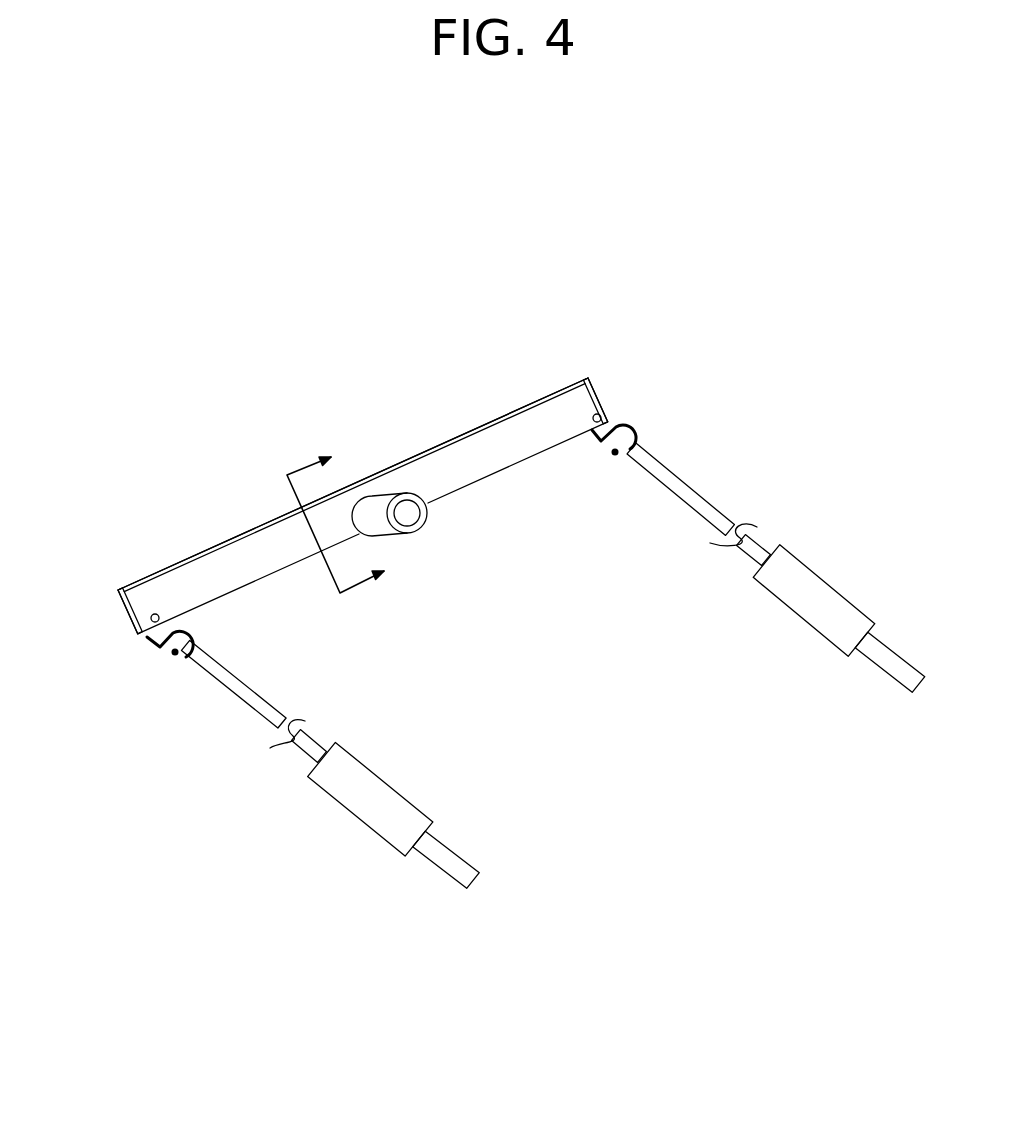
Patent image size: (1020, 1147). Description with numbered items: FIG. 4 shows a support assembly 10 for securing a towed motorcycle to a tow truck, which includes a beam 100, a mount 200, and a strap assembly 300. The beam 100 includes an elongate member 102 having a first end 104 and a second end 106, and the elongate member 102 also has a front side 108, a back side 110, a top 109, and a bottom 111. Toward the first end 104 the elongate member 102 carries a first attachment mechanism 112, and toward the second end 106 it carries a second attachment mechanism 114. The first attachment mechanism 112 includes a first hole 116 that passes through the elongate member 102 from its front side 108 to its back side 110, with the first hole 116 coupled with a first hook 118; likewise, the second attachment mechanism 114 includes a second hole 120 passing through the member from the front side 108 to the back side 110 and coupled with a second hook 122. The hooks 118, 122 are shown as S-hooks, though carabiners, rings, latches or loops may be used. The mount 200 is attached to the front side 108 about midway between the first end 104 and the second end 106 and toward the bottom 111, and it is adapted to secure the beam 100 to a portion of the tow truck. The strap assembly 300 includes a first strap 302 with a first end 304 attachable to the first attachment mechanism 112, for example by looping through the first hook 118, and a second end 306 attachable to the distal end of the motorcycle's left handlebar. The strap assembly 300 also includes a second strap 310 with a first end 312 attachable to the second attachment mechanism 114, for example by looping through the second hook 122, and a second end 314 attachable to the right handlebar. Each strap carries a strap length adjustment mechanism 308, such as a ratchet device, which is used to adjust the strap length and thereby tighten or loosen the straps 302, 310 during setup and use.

The support assembly 10 is at (230, 277).
The beam 100 is at (340, 344).
The elongate member 102 is at (422, 381).
The first end 104 is at (130, 610).
The second end 106 is at (600, 391).
The front side 108 is at (445, 470).
The top 109 is at (240, 534).
The back side 110 is at (477, 417).
The bottom 111 is at (475, 490).
The first attachment mechanism 112 is at (152, 660).
The second attachment mechanism 114 is at (637, 418).
The first hole 116 is at (155, 614).
The first hook 118 is at (188, 638).
The second hole 120 is at (593, 417).
The second hook 122 is at (605, 441).
The mount 200 is at (412, 540).
The strap assembly 300 is at (212, 765).
The first strap 302 is at (243, 708).
The first end 304 is at (183, 663).
The second end 306 is at (475, 885).
The strap length adjustment mechanism 308 is at (353, 810).
The second strap 310 is at (695, 491).
The first end 312 is at (643, 440).
The second end 314 is at (921, 686).